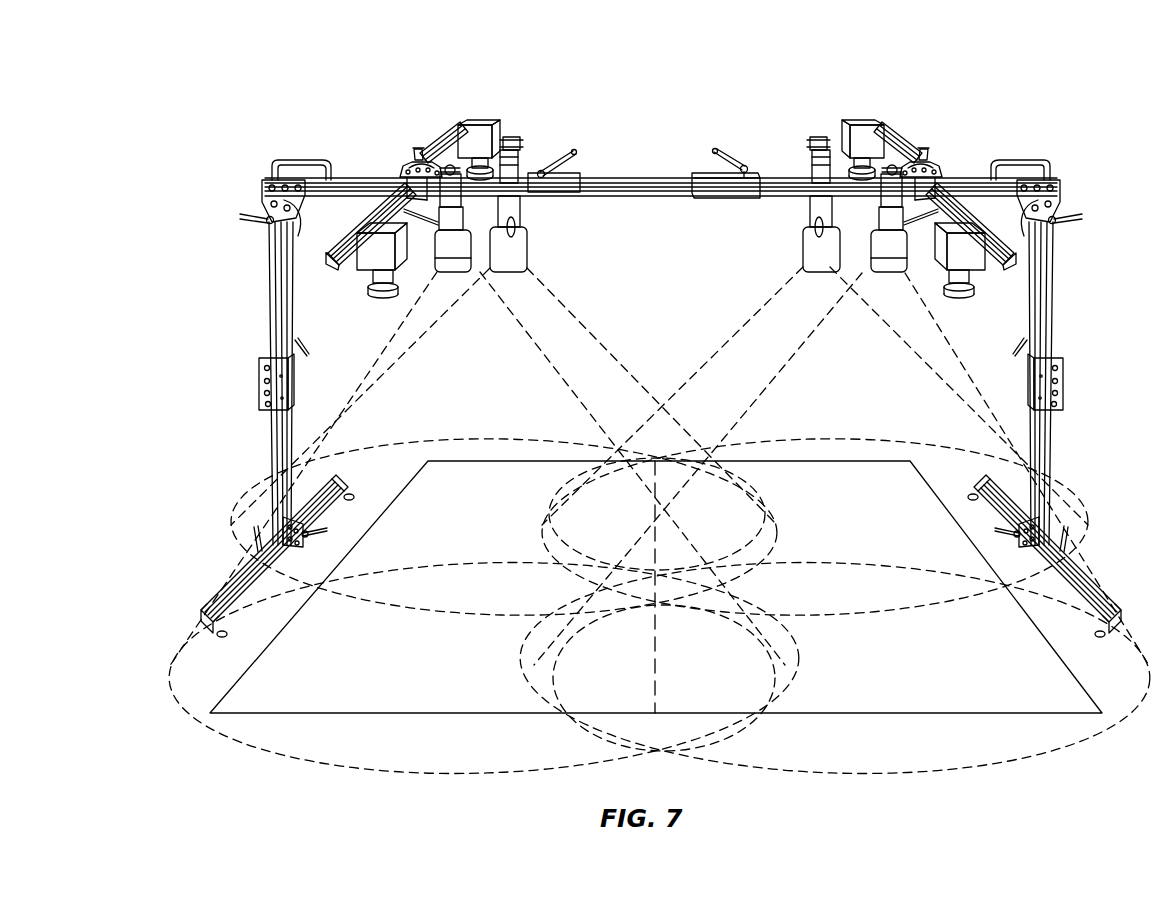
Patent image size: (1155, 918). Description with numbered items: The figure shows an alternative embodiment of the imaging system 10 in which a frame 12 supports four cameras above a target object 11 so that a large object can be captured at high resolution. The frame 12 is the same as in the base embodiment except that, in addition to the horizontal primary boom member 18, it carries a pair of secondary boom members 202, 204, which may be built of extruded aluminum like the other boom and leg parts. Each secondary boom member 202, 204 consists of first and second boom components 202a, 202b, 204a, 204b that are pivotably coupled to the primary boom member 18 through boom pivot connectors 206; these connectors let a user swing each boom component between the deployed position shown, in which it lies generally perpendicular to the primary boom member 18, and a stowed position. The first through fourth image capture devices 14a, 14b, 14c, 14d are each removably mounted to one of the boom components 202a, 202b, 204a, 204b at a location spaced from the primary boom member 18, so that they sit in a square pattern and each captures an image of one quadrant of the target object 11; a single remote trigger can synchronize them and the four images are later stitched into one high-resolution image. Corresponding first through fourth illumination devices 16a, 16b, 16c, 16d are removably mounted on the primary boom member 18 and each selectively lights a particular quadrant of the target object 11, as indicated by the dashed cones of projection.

The system 10 is at (954, 72).
The target object 11 is at (947, 665).
The frame 12 is at (1064, 181).
The primary boom member 18 is at (645, 206).
The first image capture device 14a is at (487, 120).
The second image capture device 14b is at (853, 122).
The third image capture device 14c is at (980, 275).
The fourth image capture device 14d is at (366, 264).
The first illumination device 16a is at (515, 140).
The second illumination device 16b is at (817, 140).
The third illumination device 16c is at (884, 252).
The fourth illumination device 16d is at (453, 252).
The secondary boom member 202 is at (951, 175).
The first boom component 202a is at (915, 137).
The second boom component 202b is at (991, 250).
The secondary boom member 204 is at (386, 172).
The first boom component 204a is at (433, 135).
The second boom component 204b is at (340, 243).
The boom pivot connector 206 is at (405, 172).